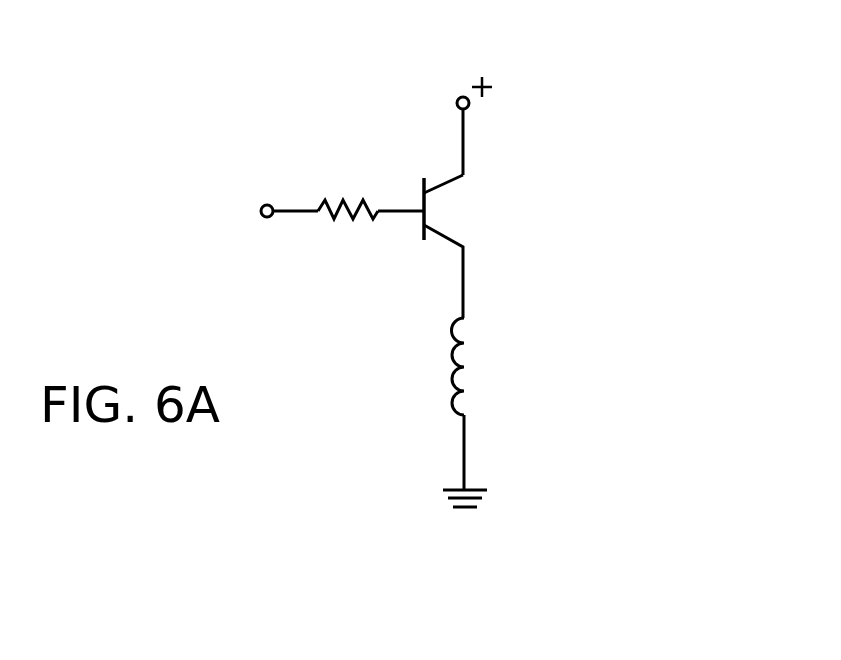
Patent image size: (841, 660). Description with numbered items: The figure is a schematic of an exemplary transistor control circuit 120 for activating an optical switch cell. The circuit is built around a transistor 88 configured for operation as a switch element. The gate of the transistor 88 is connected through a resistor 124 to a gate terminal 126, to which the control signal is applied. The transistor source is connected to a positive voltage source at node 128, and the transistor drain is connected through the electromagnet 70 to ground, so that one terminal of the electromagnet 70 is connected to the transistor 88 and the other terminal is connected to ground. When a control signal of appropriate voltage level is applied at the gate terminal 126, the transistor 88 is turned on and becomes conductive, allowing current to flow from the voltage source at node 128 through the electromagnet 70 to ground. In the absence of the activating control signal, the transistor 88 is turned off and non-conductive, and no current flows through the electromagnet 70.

The transistor control circuit 120 is at (626, 196).
The resistor 124 is at (350, 222).
The gate terminal 126 is at (262, 219).
The node 128 is at (456, 101).
The transistor 88 is at (422, 180).
The electromagnet 70 is at (450, 355).